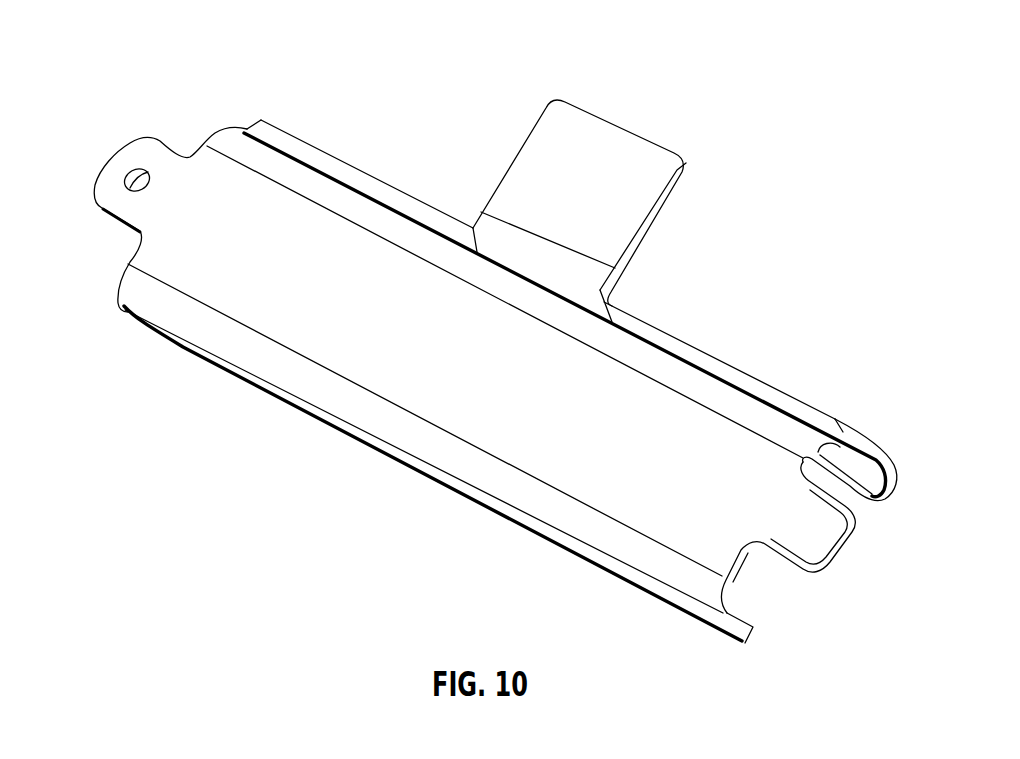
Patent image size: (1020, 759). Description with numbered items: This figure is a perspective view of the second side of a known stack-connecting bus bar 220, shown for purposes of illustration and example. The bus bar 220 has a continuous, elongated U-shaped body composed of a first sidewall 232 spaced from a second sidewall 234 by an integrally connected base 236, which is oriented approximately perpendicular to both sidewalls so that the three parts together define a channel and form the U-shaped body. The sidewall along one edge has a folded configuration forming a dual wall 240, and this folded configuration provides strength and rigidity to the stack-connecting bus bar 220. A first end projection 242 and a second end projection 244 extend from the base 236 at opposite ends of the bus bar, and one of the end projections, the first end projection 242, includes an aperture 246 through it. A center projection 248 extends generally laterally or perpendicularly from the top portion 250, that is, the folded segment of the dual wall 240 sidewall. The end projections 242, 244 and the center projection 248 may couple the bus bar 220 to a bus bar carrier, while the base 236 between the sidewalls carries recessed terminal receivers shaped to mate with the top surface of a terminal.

The stack-connecting bus bar 220 is at (808, 284).
The first sidewall 232 is at (714, 353).
The second sidewall 234 is at (373, 437).
The base 236 is at (300, 228).
The dual wall 240 is at (887, 461).
The first end projection 242 is at (122, 166).
The second end projection 244 is at (822, 533).
The aperture 246 is at (137, 170).
The center projection 248 is at (625, 120).
The top portion 250 is at (411, 207).